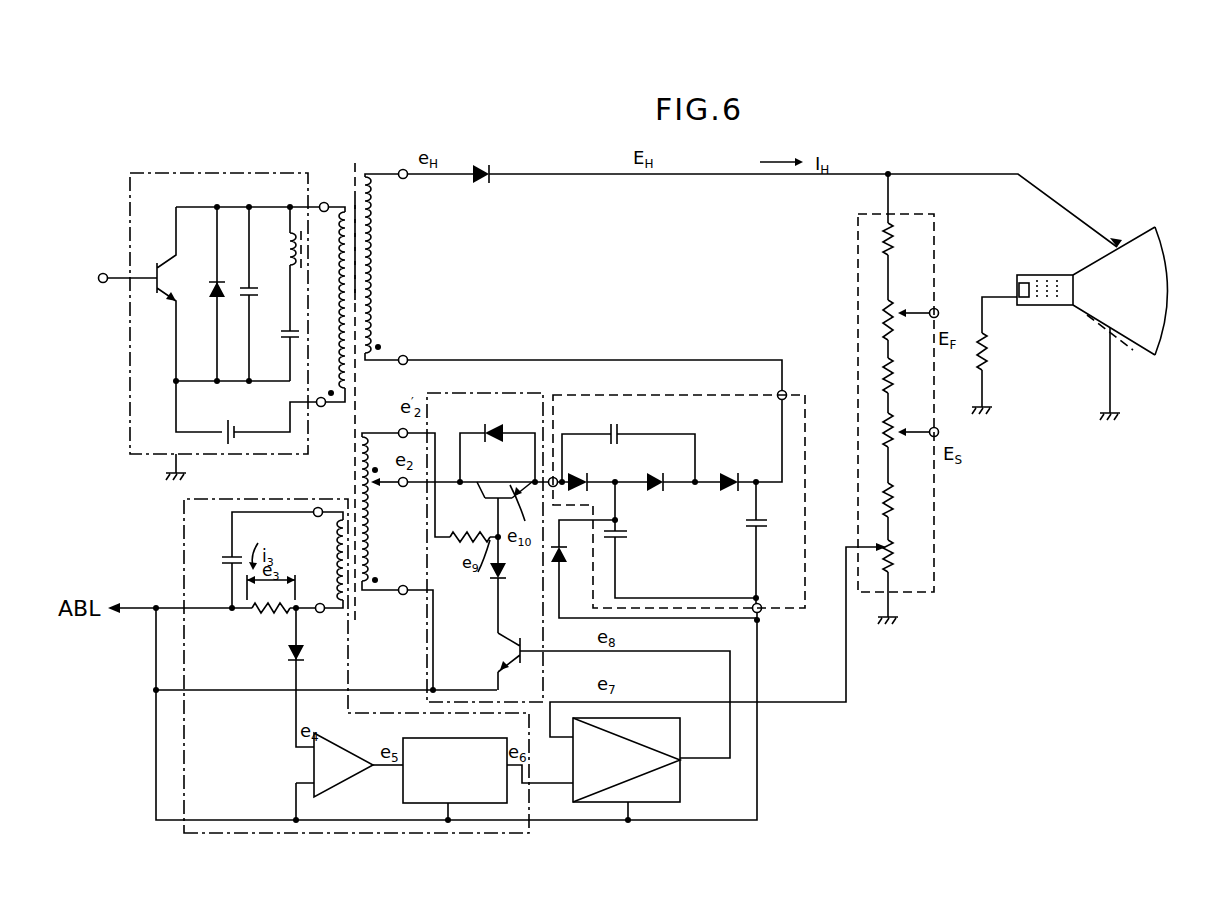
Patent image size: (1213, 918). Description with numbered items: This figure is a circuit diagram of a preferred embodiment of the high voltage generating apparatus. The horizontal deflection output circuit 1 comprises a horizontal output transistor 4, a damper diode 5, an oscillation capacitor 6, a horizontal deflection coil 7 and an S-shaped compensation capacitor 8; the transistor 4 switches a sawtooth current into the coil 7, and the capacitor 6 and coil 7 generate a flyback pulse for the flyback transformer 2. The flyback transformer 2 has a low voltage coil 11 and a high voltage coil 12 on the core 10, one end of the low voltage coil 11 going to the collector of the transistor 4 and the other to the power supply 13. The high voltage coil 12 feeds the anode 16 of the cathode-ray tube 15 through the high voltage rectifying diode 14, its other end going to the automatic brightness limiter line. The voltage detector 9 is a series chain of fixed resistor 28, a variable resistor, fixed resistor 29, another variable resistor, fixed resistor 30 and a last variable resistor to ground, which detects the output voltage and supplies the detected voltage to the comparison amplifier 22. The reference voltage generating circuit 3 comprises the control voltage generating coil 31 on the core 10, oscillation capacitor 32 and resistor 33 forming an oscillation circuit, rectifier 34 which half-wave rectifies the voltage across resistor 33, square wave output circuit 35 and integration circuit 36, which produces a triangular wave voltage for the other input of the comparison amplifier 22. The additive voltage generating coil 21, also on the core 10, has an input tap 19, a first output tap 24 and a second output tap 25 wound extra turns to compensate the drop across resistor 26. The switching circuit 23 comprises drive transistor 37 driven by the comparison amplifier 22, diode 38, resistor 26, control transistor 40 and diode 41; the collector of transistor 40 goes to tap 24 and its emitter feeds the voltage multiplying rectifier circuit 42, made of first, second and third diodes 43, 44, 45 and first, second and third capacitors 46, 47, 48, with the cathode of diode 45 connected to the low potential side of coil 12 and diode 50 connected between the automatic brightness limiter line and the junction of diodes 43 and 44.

The horizontal deflection output circuit 1 is at (143, 173).
The flyback transformer 2 is at (363, 167).
The reference voltage generating circuit 3 is at (184, 830).
The horizontal output transistor 4 is at (170, 297).
The damper diode 5 is at (215, 290).
The oscillation capacitor 6 is at (249, 288).
The horizontal deflection coil 7 is at (290, 245).
The S-shaped compensation capacitor 8 is at (290, 333).
The voltage detector 9 is at (936, 507).
The core 10 is at (352, 200).
The low voltage coil 11 is at (340, 283).
The high voltage coil 12 is at (372, 268).
The power supply 13 is at (228, 425).
The high voltage rectifying diode 14 is at (481, 185).
The cathode-ray tube 15 is at (1160, 265).
The anode 16 is at (1117, 245).
The input tap 19 is at (403, 595).
The additive voltage generating coil 21 is at (372, 525).
The comparison amplifier 22 is at (683, 785).
The switching circuit 23 is at (488, 393).
The first output tap 24 is at (405, 487).
The second output tap 25 is at (400, 428).
The resistor 26 is at (456, 540).
The fixed resistor 28 is at (902, 240).
The fixed resistor 29 is at (897, 367).
The fixed resistor 30 is at (898, 490).
The control voltage generating coil 31 is at (338, 552).
The oscillation capacitor 32 is at (228, 555).
The resistor 33 is at (270, 615).
The rectifier 34 is at (288, 652).
The square wave output circuit 35 is at (341, 748).
The integration circuit 36 is at (470, 738).
The drive transistor 37 is at (510, 651).
The diode 38 is at (490, 580).
The control transistor 40 is at (497, 490).
The diode 41 is at (507, 428).
The voltage multiplying rectifier circuit 42 is at (693, 393).
The first diode 43 is at (578, 473).
The second diode 44 is at (651, 473).
The third diode 45 is at (724, 473).
The first capacitor 46 is at (612, 426).
The second capacitor 47 is at (628, 545).
The third capacitor 48 is at (768, 523).
The diode 50 is at (567, 555).